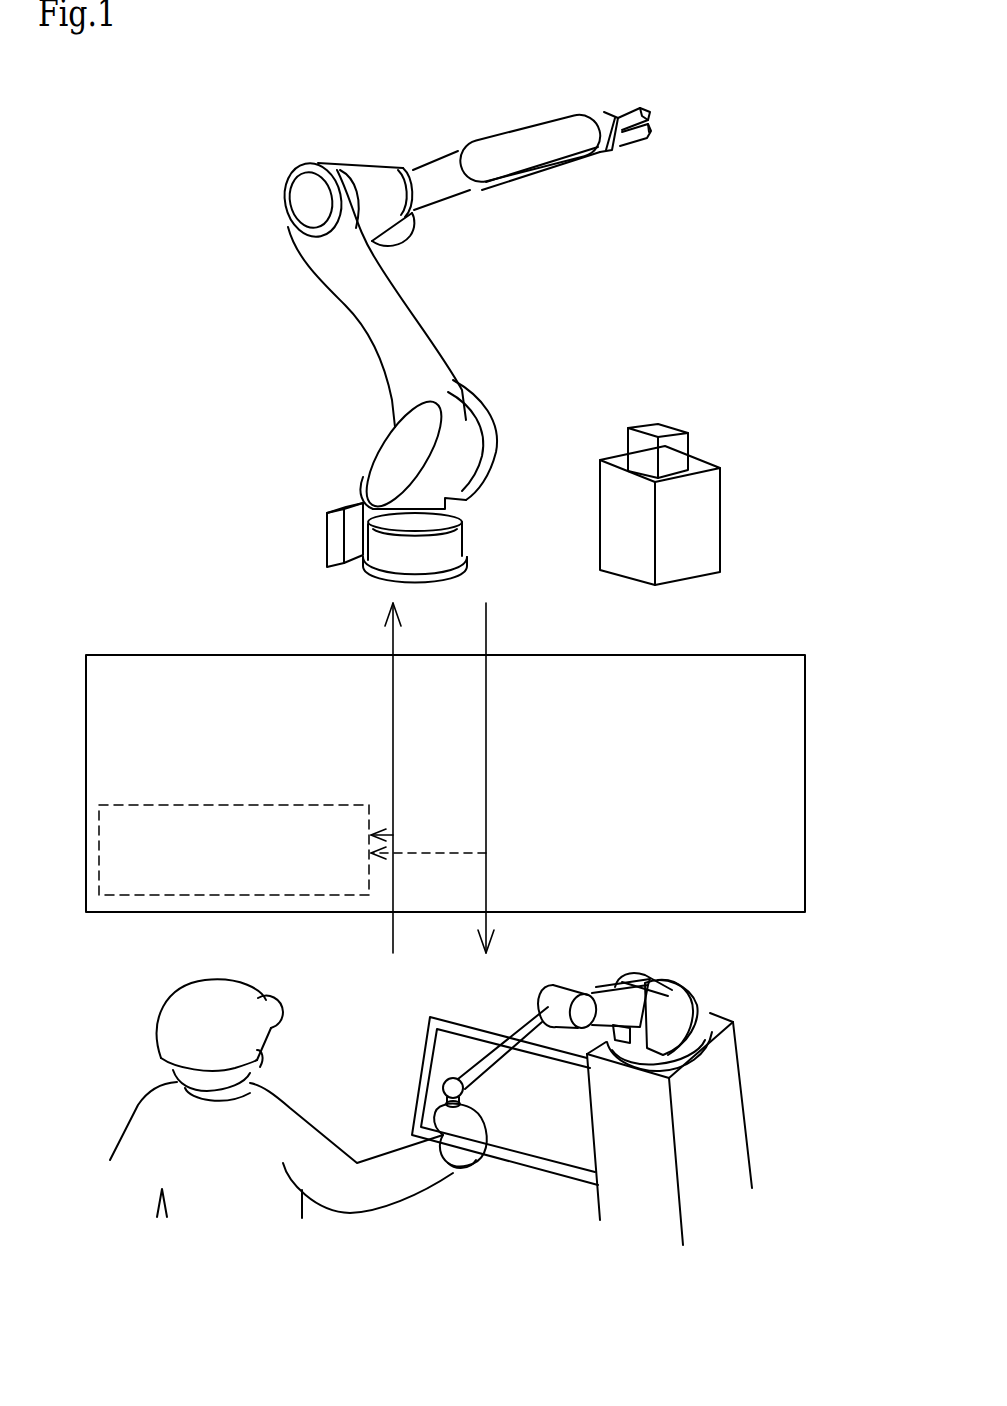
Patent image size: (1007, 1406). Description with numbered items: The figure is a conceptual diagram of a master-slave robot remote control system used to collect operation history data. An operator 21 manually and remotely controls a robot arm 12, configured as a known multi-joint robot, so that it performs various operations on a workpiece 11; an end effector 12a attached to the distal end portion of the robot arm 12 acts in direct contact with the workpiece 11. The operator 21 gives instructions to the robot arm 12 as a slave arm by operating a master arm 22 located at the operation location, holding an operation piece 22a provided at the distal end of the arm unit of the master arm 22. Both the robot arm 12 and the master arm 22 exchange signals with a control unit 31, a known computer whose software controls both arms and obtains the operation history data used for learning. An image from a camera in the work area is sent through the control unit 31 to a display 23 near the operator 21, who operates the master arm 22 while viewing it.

The workpiece 11 is at (660, 428).
The robot arm 12 is at (253, 300).
The end effector 12a is at (631, 143).
The operator 21 is at (120, 1022).
The master arm 22 is at (615, 957).
The operation piece 22a is at (470, 1168).
The display 23 is at (415, 1046).
The control unit 31 is at (537, 655).